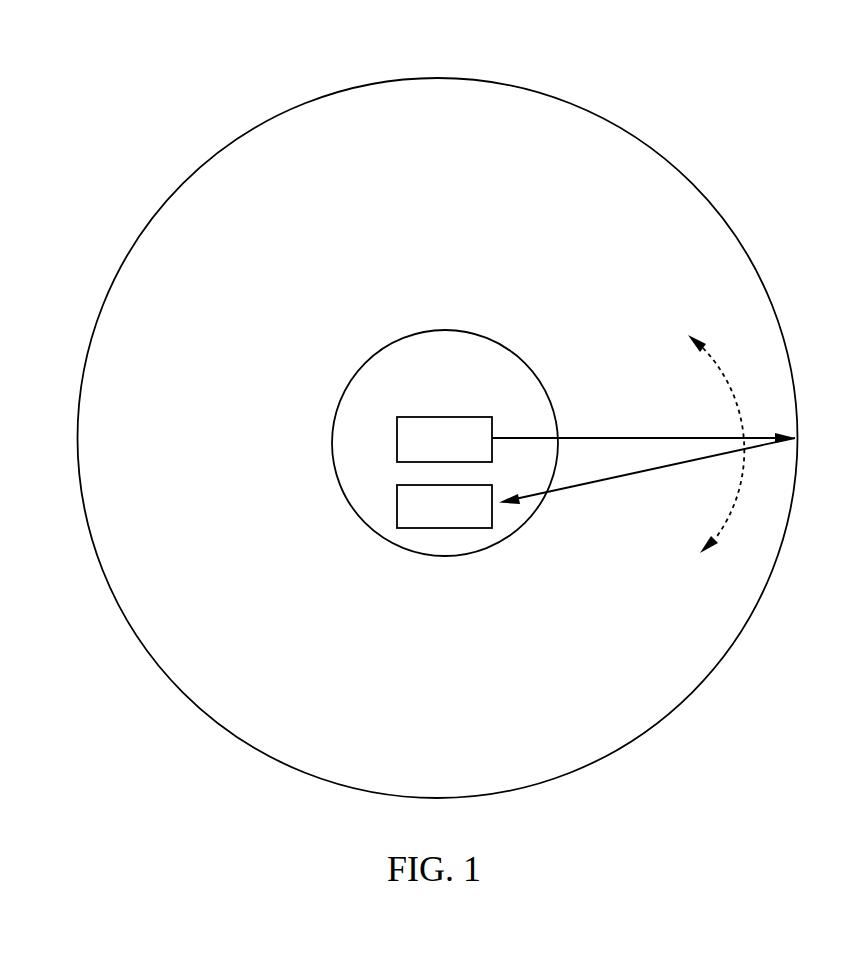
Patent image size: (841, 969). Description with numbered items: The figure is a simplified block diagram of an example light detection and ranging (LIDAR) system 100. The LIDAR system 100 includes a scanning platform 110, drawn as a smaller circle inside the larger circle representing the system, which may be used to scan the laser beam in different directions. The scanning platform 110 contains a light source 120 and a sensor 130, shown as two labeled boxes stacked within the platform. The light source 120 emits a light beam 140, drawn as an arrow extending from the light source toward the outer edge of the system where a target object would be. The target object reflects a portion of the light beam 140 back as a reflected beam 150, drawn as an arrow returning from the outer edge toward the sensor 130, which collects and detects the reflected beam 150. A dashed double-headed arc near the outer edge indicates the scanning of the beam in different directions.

The LIDAR system 100 is at (465, 42).
The scanning platform 110 is at (480, 340).
The light source 120 is at (435, 415).
The sensor 130 is at (442, 530).
The light beam 140 is at (593, 443).
The reflected beam 150 is at (618, 480).